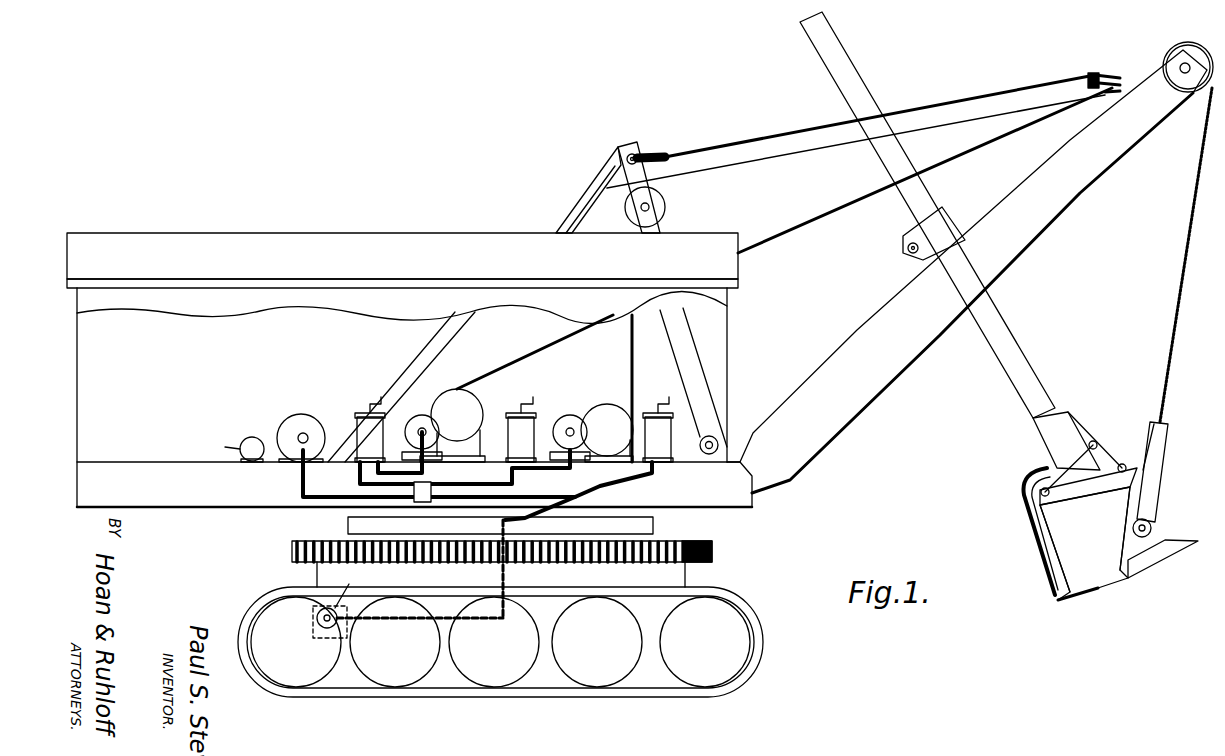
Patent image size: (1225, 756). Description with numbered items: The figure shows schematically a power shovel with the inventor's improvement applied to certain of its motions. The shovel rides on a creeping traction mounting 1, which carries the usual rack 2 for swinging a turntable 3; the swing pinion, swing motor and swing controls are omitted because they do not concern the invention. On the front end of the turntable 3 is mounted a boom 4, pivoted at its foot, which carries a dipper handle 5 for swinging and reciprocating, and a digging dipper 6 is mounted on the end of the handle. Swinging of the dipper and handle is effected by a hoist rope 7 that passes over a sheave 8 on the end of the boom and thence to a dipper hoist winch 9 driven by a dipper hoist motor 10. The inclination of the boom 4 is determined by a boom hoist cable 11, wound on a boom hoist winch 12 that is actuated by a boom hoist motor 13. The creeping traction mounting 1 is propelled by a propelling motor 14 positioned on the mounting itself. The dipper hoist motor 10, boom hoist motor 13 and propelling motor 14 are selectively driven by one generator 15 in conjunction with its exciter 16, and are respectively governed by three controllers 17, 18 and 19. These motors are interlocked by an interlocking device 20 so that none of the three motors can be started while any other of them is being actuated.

The creeping traction mounting 1 is at (755, 622).
The rack 2 is at (712, 548).
The turntable 3 is at (653, 526).
The boom 4 is at (882, 380).
The dipper handle 5 is at (1022, 342).
The digging dipper 6 is at (1103, 567).
The hoist rope 7 is at (1180, 300).
The sheave 8 is at (1190, 43).
The dipper hoist winch 9 is at (462, 405).
The dipper hoist motor 10 is at (422, 414).
The boom hoist cable 11 is at (770, 170).
The boom hoist winch 12 is at (607, 405).
The boom hoist motor 13 is at (568, 420).
The propelling motor 14 is at (313, 625).
The generator 15 is at (303, 420).
The exciter 16 is at (252, 440).
The controller 17 is at (362, 410).
The controller 18 is at (522, 410).
The controller 19 is at (652, 410).
The interlocking device 20 is at (434, 485).